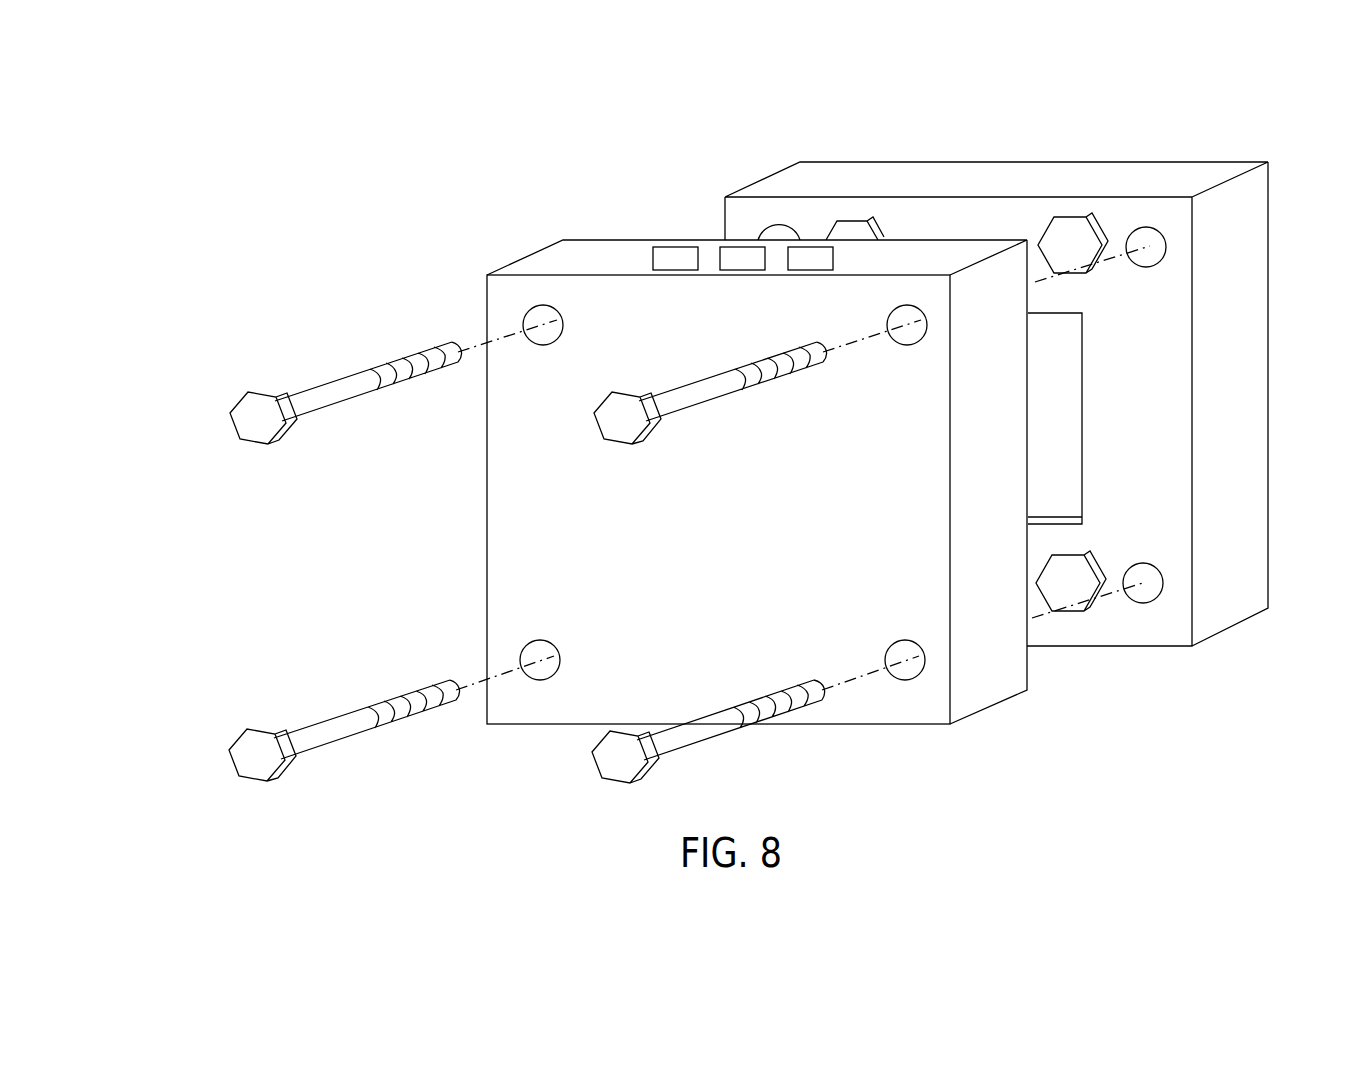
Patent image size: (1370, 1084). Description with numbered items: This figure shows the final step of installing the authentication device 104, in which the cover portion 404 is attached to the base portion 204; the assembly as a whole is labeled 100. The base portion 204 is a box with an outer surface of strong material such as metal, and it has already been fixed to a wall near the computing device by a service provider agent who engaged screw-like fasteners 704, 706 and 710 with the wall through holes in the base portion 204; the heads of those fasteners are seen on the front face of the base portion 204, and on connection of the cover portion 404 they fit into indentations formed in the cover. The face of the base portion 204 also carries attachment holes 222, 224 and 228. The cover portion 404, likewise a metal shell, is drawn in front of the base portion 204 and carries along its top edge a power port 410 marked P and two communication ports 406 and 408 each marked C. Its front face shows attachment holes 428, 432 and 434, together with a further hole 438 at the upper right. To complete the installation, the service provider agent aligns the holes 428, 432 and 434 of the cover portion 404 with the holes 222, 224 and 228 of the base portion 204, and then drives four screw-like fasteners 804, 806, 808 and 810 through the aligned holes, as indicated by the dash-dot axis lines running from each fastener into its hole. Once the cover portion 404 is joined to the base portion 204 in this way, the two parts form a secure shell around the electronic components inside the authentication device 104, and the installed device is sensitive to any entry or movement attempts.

The system 100 is at (1211, 121).
The authentication device 104 is at (598, 196).
The base portion 204 is at (1270, 278).
The attachment hole 222 is at (797, 240).
The attachment hole 224 is at (1147, 268).
The attachment hole 228 is at (1164, 580).
The cover portion 404 is at (486, 521).
The communication port 406 is at (810, 270).
The communication port 408 is at (742, 270).
The power port 410 is at (677, 270).
The attachment hole 428 is at (558, 336).
The attachment hole 432 is at (556, 646).
The attachment hole 434 is at (892, 647).
The bolt hole 438 is at (907, 346).
The fastener 704 is at (880, 228).
The fastener 706 is at (1045, 240).
The fastener 710 is at (1098, 566).
The fastener 804 is at (257, 442).
The fastener 806 is at (621, 442).
The fastener 808 is at (257, 779).
The fastener 810 is at (620, 780).